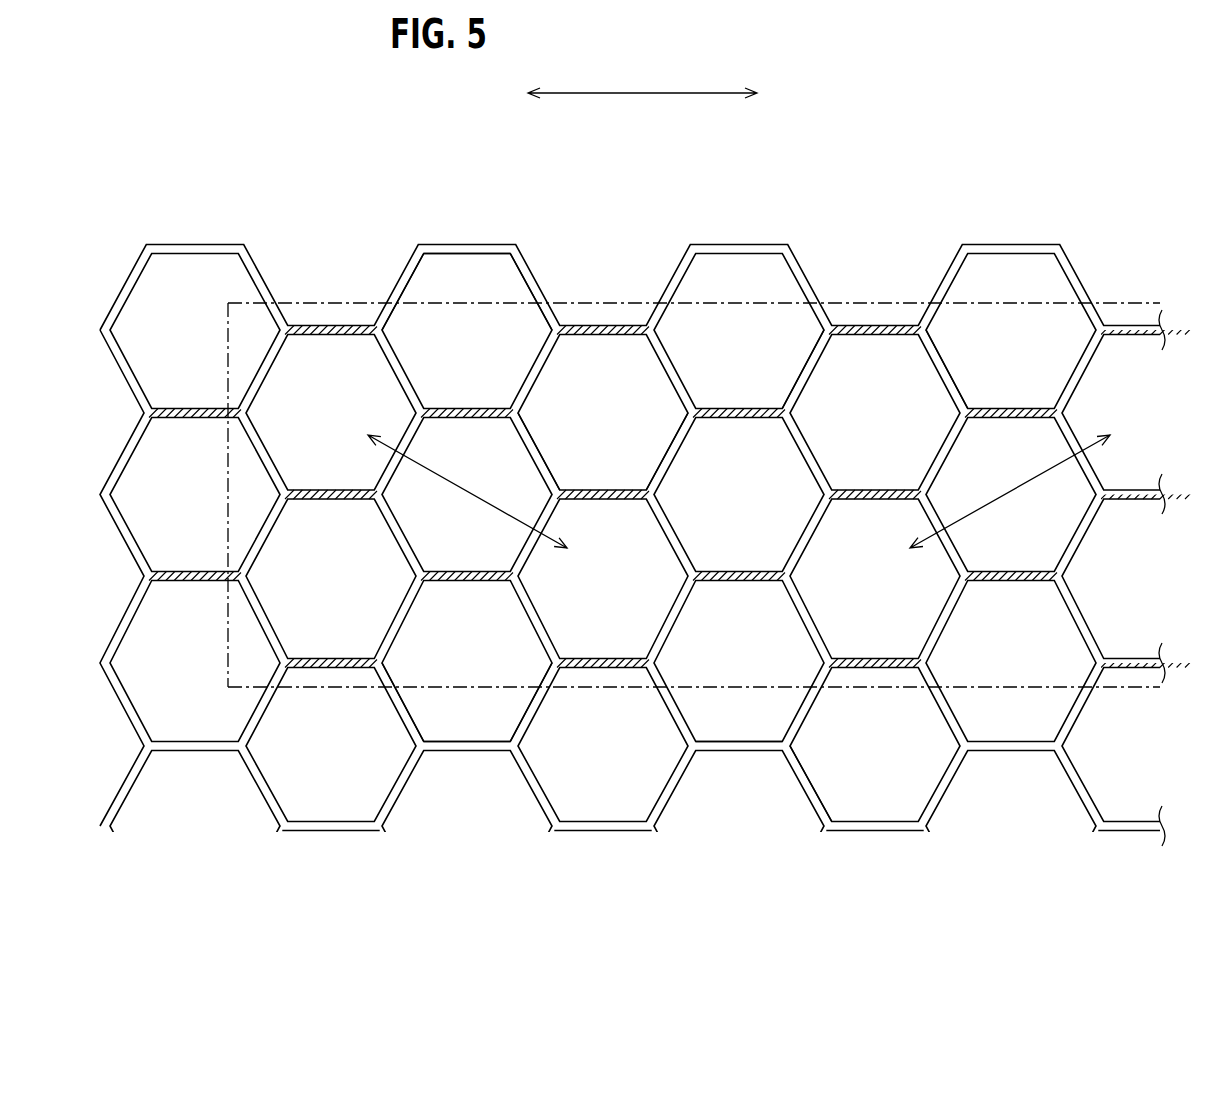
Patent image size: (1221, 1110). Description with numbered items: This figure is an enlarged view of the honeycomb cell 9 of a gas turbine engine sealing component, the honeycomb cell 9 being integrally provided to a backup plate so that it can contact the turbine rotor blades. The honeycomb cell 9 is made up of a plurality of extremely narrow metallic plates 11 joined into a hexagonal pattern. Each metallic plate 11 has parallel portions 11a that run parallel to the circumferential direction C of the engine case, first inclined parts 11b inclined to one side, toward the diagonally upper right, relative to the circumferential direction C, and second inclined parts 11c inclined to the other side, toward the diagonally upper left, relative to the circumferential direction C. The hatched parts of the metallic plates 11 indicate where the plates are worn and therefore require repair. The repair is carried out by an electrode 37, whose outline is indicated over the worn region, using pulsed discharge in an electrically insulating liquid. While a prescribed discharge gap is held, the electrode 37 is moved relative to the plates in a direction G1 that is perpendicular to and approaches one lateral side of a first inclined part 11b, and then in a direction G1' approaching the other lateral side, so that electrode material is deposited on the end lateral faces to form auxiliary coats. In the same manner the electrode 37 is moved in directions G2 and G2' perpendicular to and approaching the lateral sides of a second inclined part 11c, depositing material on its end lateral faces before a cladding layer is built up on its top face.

The honeycomb cell 9 is at (182, 235).
The metallic plate 11 is at (453, 244).
The parallel portion 11a is at (502, 245).
The first inclined part 11b is at (397, 277).
The second inclined part 11c is at (535, 272).
The electrode 37 is at (637, 303).
The circumferential direction C is at (642, 79).
The direction G1 is at (449, 482).
The direction G1' is at (583, 553).
The direction G2 is at (991, 503).
The direction G2' is at (1126, 430).